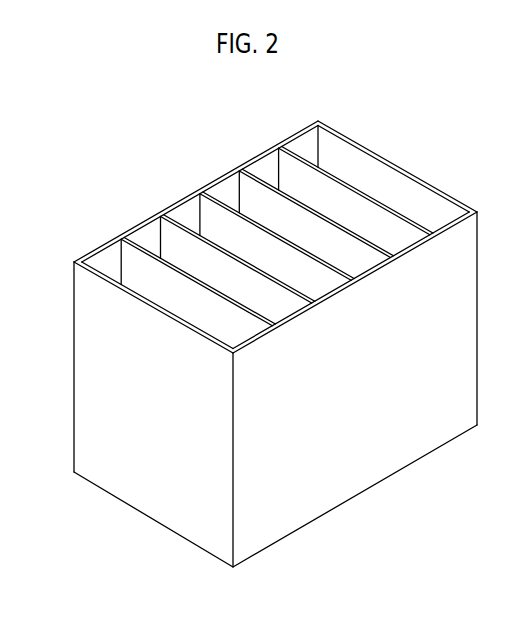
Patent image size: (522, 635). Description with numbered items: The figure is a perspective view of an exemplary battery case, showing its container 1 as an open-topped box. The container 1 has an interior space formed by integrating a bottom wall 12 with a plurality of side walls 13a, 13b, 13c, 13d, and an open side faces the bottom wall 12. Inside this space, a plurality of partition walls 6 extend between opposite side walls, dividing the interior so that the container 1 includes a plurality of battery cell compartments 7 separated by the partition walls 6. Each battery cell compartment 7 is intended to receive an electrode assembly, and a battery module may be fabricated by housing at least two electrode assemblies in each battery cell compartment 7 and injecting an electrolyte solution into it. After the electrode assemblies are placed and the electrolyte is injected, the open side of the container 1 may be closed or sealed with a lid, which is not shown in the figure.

The container 1 is at (82, 338).
The partition wall 6 is at (338, 178).
The battery cell compartment 7 is at (147, 233).
The bottom wall 12 is at (207, 551).
The side wall 13a is at (377, 479).
The side wall 13b is at (89, 253).
The side wall 13c is at (422, 181).
The side wall 13d is at (132, 501).